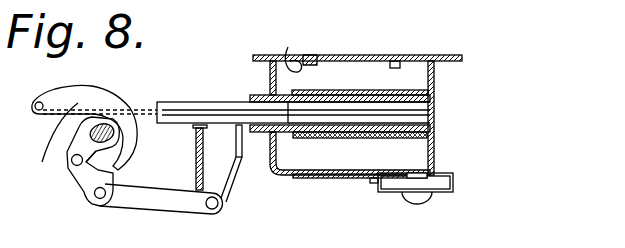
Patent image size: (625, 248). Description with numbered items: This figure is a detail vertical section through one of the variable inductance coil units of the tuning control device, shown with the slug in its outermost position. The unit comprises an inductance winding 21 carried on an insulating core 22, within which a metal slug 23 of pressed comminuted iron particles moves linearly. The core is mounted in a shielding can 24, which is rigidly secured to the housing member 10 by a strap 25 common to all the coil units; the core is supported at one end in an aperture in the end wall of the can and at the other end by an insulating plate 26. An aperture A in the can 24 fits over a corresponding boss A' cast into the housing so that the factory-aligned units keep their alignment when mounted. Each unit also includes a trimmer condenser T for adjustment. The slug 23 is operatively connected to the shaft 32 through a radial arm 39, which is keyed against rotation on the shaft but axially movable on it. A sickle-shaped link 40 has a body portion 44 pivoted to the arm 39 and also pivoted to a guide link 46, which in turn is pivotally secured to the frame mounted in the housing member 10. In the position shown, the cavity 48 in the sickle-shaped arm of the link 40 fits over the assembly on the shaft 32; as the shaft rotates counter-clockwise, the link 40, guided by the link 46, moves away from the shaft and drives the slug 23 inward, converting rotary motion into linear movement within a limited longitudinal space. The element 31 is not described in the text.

The sickle-shaped link 40 is at (116, 97).
The metal slug 23 is at (218, 103).
The guide link 46 is at (167, 203).
The body portion 44 is at (88, 178).
The shaft 32 is at (112, 142).
The radial arm 39 is at (93, 156).
The cavity 48 is at (42, 144).
The shielding can 24 is at (267, 167).
The insulating plate 26 is at (434, 88).
The inductance winding 21 is at (338, 92).
The insulating core 22 is at (367, 128).
The strap 25 is at (312, 177).
The trimmer condenser T is at (443, 185).
The boss A' is at (293, 47).
The aperture A is at (326, 44).
The member 31 is at (12, 247).
The housing member 10 is at (398, 243).